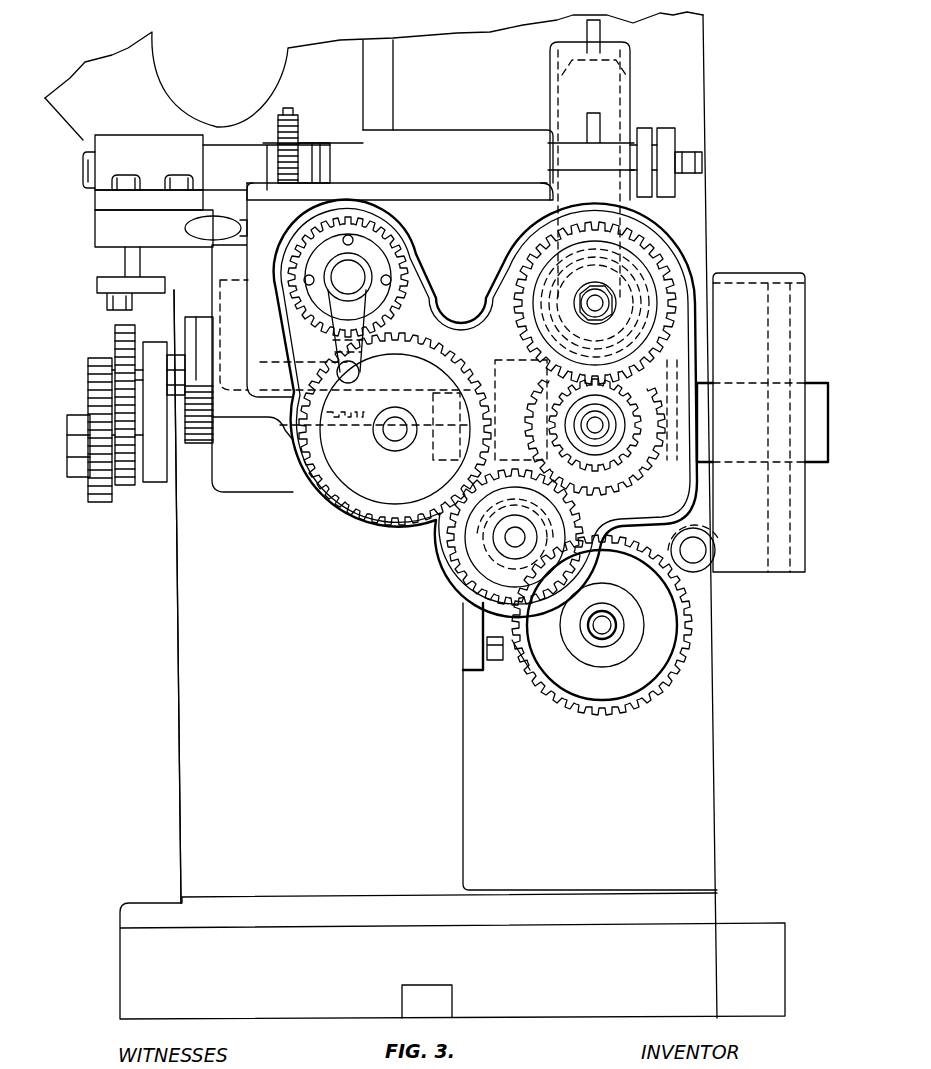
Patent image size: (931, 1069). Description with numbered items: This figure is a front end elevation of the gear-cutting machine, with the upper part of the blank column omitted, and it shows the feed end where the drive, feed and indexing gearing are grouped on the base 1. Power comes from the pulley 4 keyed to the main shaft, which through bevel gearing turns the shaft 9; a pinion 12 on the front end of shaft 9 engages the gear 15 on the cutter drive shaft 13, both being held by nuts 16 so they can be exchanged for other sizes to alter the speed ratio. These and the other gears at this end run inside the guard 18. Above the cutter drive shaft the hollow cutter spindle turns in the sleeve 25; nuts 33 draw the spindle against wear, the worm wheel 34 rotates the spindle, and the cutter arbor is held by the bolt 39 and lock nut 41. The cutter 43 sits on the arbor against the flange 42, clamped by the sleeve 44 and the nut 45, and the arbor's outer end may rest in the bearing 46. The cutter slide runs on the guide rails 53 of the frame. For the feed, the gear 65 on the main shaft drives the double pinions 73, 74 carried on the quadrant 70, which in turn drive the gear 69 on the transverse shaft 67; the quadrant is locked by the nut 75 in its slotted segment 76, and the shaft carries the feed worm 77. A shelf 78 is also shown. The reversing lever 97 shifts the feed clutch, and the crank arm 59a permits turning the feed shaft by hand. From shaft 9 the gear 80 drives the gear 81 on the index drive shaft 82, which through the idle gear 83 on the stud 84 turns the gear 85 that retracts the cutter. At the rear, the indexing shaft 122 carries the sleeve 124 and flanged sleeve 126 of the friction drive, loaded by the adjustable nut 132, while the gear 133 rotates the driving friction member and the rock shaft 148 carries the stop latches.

The base 1 is at (187, 663).
The pulley 4 is at (773, 270).
The shaft 9 is at (623, 425).
The pinion 12 is at (637, 433).
The cutter drive shaft 13 is at (607, 305).
The gear 15 is at (613, 305).
The nuts 16 is at (613, 420).
The guard 18 is at (360, 537).
The sleeve 25 is at (447, 133).
The nuts 33 is at (643, 128).
The worm wheel 34 is at (567, 68).
The bolt 39 is at (702, 150).
The lock nut 41 is at (668, 143).
The flange 42 is at (322, 148).
The cutter 43 is at (303, 143).
The sleeve 44 is at (223, 157).
The nut 45 is at (87, 173).
The bearing 46 is at (120, 147).
The guide rails 53 is at (125, 253).
The crank arm 59a is at (353, 318).
The gear 65 is at (100, 503).
The transverse shaft 67 is at (227, 372).
The gear 69 is at (117, 340).
The quadrant 70 is at (157, 485).
The pinion 73 is at (98, 453).
The pinion 74 is at (128, 485).
The nut 75 is at (173, 373).
The slotted segment 76 is at (203, 335).
The feed worm 77 is at (303, 395).
The shelf 78 is at (283, 447).
The gear 80 is at (657, 449).
The gear 81 is at (470, 573).
The index drive shaft 82 is at (510, 535).
The idle gear 83 is at (323, 502).
The stud 84 is at (393, 437).
The gear 85 is at (393, 245).
The reversing lever 97 is at (193, 225).
The driven indexing shaft 122 is at (597, 637).
The sleeve 124 is at (600, 640).
The flanged sleeve 126 is at (633, 680).
The adjustable nut 132 is at (560, 645).
The gear 133 is at (680, 652).
The rock shaft 148 is at (695, 553).